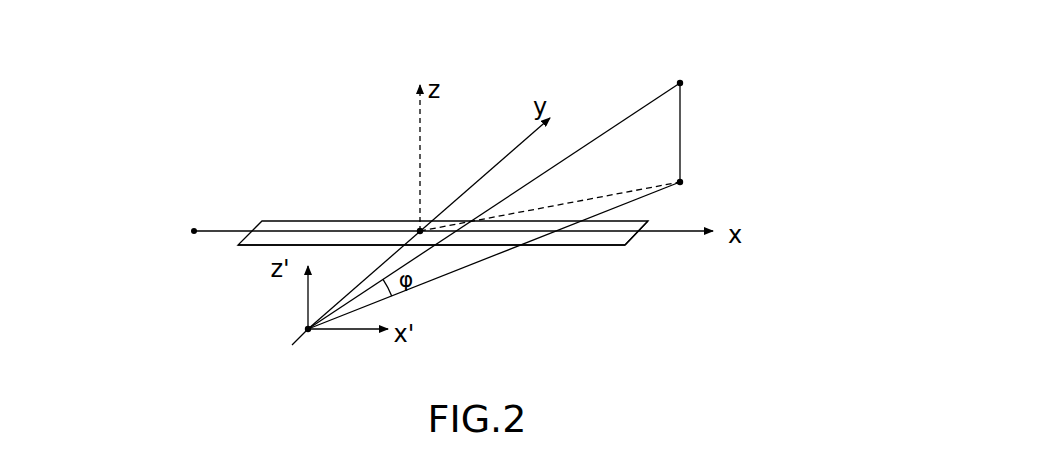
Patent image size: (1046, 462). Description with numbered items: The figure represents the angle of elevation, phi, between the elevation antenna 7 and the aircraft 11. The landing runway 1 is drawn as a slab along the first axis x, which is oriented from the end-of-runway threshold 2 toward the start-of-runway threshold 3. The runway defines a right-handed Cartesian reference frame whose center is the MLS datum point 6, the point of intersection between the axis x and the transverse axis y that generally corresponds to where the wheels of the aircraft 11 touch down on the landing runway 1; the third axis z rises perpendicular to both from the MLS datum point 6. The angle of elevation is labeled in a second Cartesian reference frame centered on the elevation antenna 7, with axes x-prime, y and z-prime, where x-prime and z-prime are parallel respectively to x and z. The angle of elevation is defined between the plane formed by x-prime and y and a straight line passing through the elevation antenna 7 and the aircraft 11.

The landing runway 1 is at (570, 246).
The end-of-runway threshold 2 is at (257, 222).
The start-of-runway threshold 3 is at (632, 242).
The MLS datum point 6 is at (419, 229).
The elevation antenna 7 is at (312, 334).
The aircraft 11 is at (684, 81).